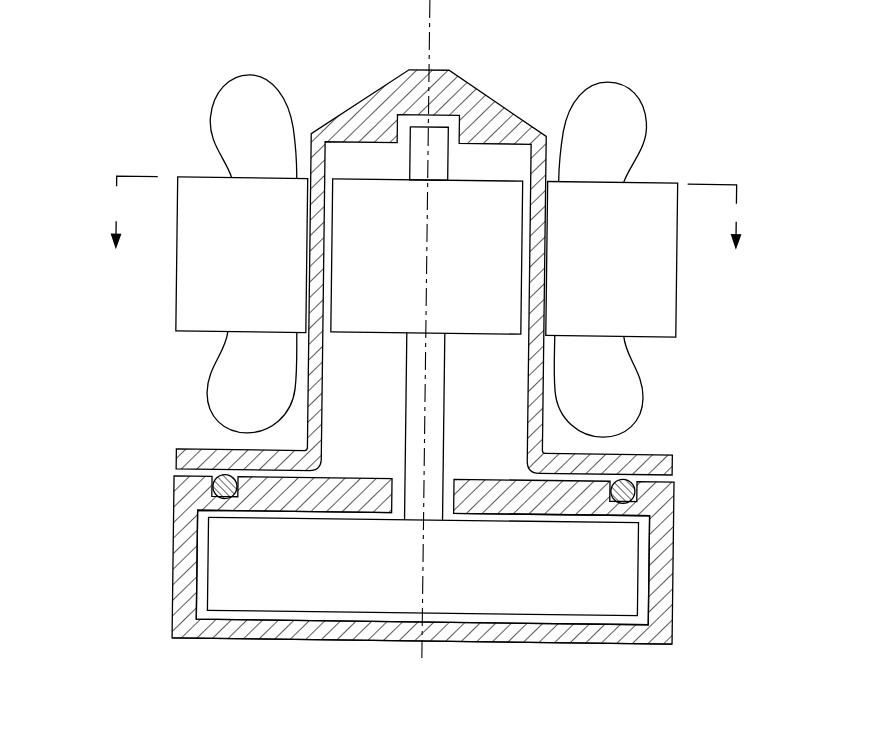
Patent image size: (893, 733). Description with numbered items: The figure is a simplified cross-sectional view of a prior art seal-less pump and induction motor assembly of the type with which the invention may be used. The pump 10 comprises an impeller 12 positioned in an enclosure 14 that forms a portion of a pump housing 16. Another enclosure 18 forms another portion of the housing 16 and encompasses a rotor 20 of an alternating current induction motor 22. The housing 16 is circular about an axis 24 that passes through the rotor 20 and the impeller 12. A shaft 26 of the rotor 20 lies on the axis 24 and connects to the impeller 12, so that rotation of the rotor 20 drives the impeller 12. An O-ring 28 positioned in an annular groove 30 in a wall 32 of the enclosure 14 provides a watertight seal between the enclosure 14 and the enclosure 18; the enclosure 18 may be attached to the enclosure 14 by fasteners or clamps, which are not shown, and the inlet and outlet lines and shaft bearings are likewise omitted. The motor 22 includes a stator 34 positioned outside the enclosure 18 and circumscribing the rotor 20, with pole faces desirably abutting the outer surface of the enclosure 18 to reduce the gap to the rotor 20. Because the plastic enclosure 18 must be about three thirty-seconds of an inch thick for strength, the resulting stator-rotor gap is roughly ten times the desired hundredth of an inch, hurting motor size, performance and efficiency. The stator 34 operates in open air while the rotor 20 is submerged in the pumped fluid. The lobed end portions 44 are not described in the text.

The pump 10 is at (82, 645).
The impeller 12 is at (428, 595).
The enclosure 14 is at (615, 631).
The pump housing 16 is at (168, 526).
The enclosure 18 is at (473, 87).
The rotor 20 is at (470, 278).
The induction motor 22 is at (289, 82).
The axis 24 is at (427, 17).
The shaft 26 is at (442, 362).
The O-ring 28 is at (223, 480).
The annular groove 30 is at (654, 510).
The wall 32 is at (594, 521).
The stator 34 is at (175, 293).
The coil end turns 44 is at (234, 100).